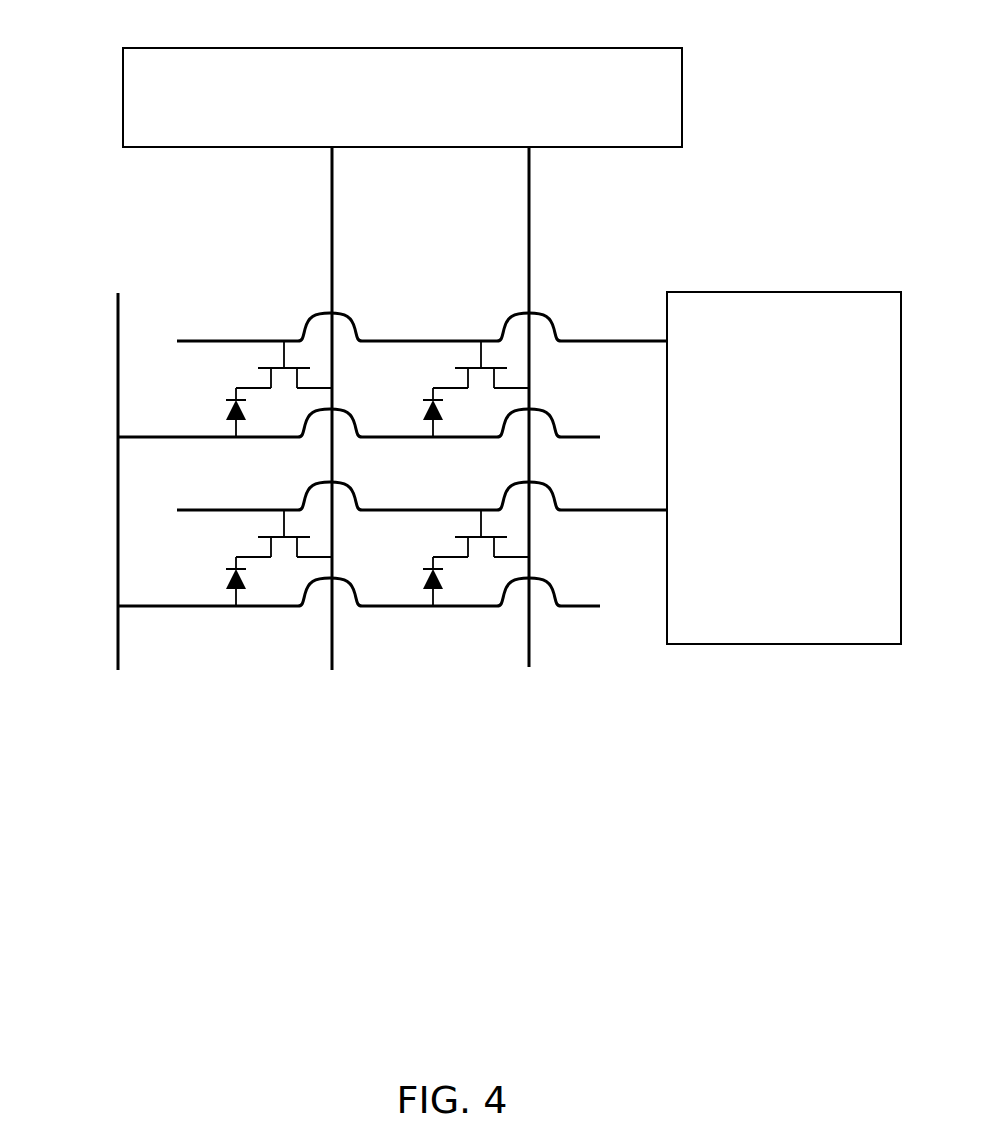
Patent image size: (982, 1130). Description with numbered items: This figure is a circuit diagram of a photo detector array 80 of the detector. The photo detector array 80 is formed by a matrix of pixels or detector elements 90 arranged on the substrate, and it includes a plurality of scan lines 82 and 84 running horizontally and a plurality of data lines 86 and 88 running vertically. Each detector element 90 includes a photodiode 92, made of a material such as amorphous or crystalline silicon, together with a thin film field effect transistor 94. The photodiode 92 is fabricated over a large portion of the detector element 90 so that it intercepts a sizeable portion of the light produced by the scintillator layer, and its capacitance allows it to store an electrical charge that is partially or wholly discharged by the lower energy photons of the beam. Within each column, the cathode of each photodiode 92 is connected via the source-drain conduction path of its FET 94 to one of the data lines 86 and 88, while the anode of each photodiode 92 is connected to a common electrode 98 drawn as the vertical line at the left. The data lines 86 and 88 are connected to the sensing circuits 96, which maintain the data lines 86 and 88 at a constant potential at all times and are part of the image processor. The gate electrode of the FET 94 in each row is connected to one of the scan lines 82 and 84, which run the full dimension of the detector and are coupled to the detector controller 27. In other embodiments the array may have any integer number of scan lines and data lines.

The detector controller 27 is at (690, 292).
The photo detector array 80 is at (157, 268).
The scan line 82 is at (639, 343).
The scan line 84 is at (639, 512).
The data line 86 is at (332, 194).
The data line 88 is at (529, 194).
The detector element 90 is at (421, 318).
The photodiode 92 is at (210, 409).
The thin film field effect transistor 94 is at (250, 370).
The sensing circuits 96 is at (158, 48).
The common electrode 98 is at (117, 656).